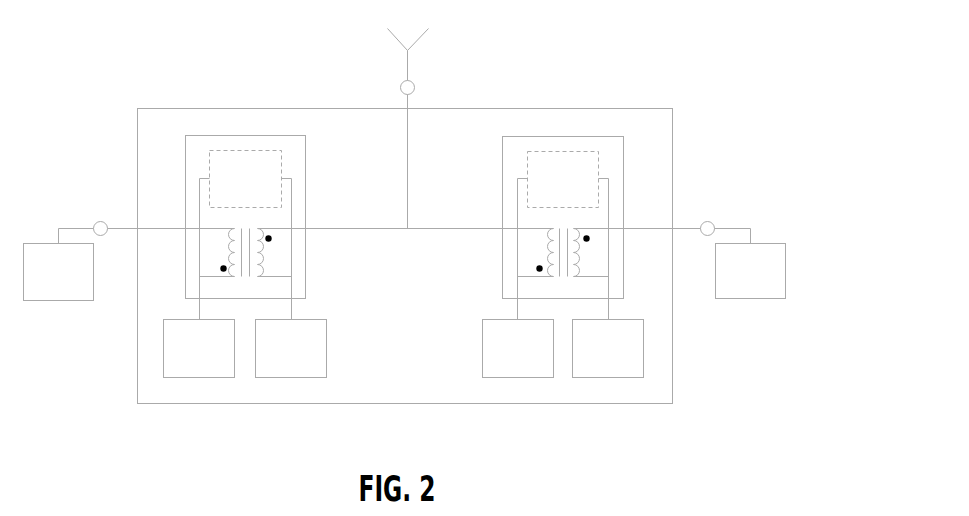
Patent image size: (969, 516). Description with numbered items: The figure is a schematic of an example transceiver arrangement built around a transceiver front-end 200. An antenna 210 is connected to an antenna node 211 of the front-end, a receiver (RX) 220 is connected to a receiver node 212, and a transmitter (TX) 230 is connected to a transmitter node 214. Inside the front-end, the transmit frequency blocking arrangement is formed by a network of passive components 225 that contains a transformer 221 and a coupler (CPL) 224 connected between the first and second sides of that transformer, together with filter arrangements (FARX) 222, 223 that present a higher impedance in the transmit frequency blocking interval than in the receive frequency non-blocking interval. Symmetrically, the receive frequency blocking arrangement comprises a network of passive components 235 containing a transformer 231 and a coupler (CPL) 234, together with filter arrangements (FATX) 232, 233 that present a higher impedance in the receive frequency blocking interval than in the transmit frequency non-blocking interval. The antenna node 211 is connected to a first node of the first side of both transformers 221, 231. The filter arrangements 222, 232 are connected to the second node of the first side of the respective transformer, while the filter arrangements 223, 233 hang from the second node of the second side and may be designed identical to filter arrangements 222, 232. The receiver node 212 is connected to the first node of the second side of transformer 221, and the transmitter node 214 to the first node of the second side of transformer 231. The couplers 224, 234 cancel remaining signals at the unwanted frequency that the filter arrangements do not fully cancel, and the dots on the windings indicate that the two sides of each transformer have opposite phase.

The transceiver front-end 200 is at (558, 108).
The antenna 210 is at (390, 35).
The antenna node 211 is at (415, 86).
The receiver node 212 is at (95, 222).
The transmitter node 214 is at (713, 222).
The receiver 220 is at (73, 293).
The transmitter 230 is at (765, 291).
The transformer 221 is at (262, 252).
The transformer 231 is at (545, 253).
The filter arrangement 222 is at (305, 370).
The filter arrangement 223 is at (213, 370).
The filter arrangement 232 is at (532, 370).
The filter arrangement 233 is at (622, 370).
The coupler 224 is at (260, 201).
The coupler 234 is at (578, 201).
The network of passive components 225 is at (305, 178).
The network of passive components 235 is at (500, 178).